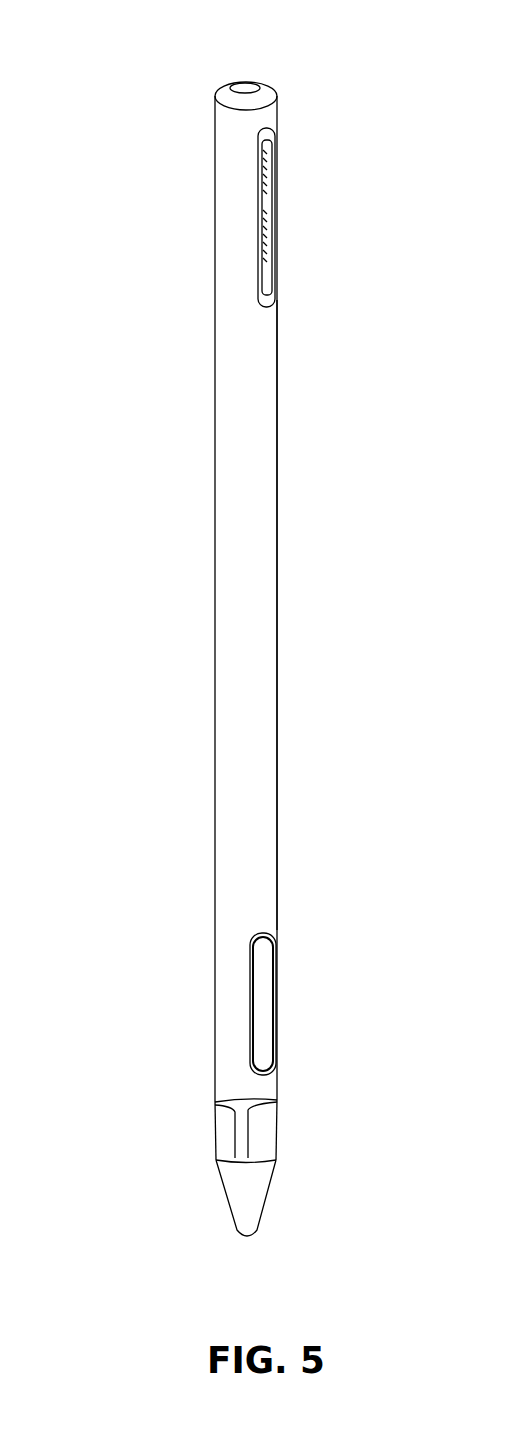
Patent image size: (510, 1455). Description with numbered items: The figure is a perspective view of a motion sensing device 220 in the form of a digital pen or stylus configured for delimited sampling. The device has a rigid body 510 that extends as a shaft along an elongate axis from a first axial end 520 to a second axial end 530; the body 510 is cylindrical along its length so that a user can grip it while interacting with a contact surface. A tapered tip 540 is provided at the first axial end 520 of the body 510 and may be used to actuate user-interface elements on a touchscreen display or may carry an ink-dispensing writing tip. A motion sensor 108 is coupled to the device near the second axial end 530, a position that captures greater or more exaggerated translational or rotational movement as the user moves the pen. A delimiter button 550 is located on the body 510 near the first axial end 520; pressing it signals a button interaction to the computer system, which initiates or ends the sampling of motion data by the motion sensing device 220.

The motion sensing device 220 is at (210, 58).
The second axial end 530 is at (270, 80).
The motion sensor 108 is at (275, 200).
The body 510 is at (282, 595).
The delimiter button 550 is at (273, 975).
The first axial end 520 is at (258, 1148).
The tapered tip 540 is at (225, 1213).